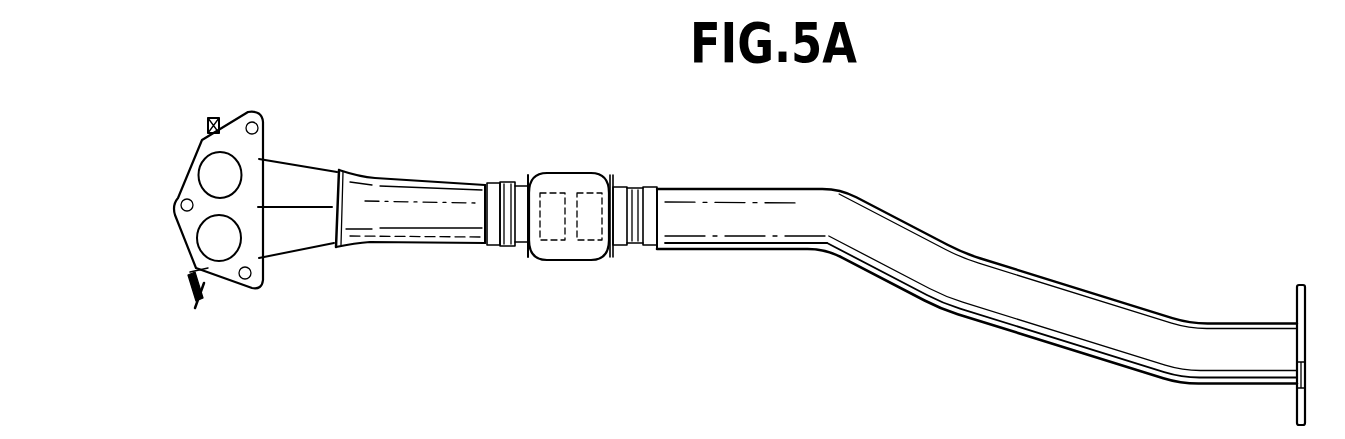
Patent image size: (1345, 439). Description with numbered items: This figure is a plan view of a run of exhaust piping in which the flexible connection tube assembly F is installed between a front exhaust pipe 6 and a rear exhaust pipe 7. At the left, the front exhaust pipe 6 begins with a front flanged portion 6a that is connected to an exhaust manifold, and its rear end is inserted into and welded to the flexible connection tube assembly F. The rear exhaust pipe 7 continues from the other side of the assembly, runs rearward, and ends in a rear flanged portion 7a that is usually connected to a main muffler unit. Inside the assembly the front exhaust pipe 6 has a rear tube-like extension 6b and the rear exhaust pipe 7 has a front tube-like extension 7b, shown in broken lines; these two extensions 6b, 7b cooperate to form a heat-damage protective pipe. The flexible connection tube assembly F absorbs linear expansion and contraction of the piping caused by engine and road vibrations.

The front flanged portion 6a is at (233, 135).
The front exhaust pipe 6 is at (392, 178).
The flexible connection tube assembly F is at (587, 211).
The rear tube-like extension 6b is at (552, 243).
The front tube-like extension 7b is at (587, 243).
The rear exhaust pipe 7 is at (812, 198).
The rear flanged portion 7a is at (1306, 303).